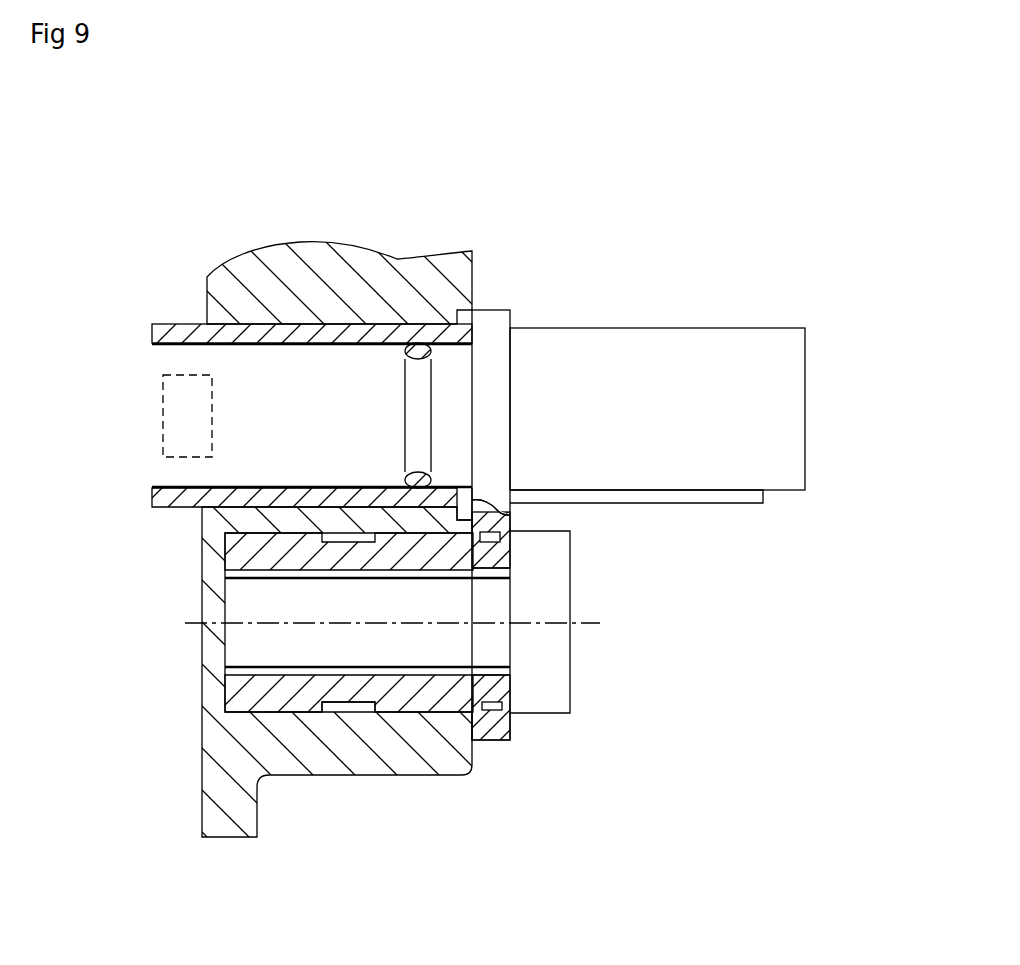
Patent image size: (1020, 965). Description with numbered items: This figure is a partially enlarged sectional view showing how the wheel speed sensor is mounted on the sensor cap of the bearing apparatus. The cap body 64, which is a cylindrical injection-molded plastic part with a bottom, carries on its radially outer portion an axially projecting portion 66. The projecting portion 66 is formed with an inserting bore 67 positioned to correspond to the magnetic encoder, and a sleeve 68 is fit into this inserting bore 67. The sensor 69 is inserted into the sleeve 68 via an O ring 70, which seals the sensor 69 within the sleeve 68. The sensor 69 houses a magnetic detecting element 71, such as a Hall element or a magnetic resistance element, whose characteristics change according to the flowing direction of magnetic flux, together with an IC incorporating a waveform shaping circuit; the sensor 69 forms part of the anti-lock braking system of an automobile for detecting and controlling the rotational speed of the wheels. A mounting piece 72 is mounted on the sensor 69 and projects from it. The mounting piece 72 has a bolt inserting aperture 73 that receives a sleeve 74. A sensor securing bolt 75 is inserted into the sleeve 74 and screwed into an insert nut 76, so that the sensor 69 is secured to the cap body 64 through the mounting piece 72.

The cap body 64 is at (287, 263).
The axially projecting portion 66 is at (410, 741).
The inserting bore 67 is at (371, 367).
The sleeve 68 is at (188, 336).
The sensor 69 is at (593, 327).
The O ring 70 is at (420, 344).
The magnetic detecting element 71 is at (178, 413).
The mounting piece 72 is at (490, 335).
The bolt inserting aperture 73 is at (490, 661).
The sleeve 74 is at (493, 692).
The sensor securing bolt 75 is at (555, 578).
The insert nut 76 is at (312, 703).